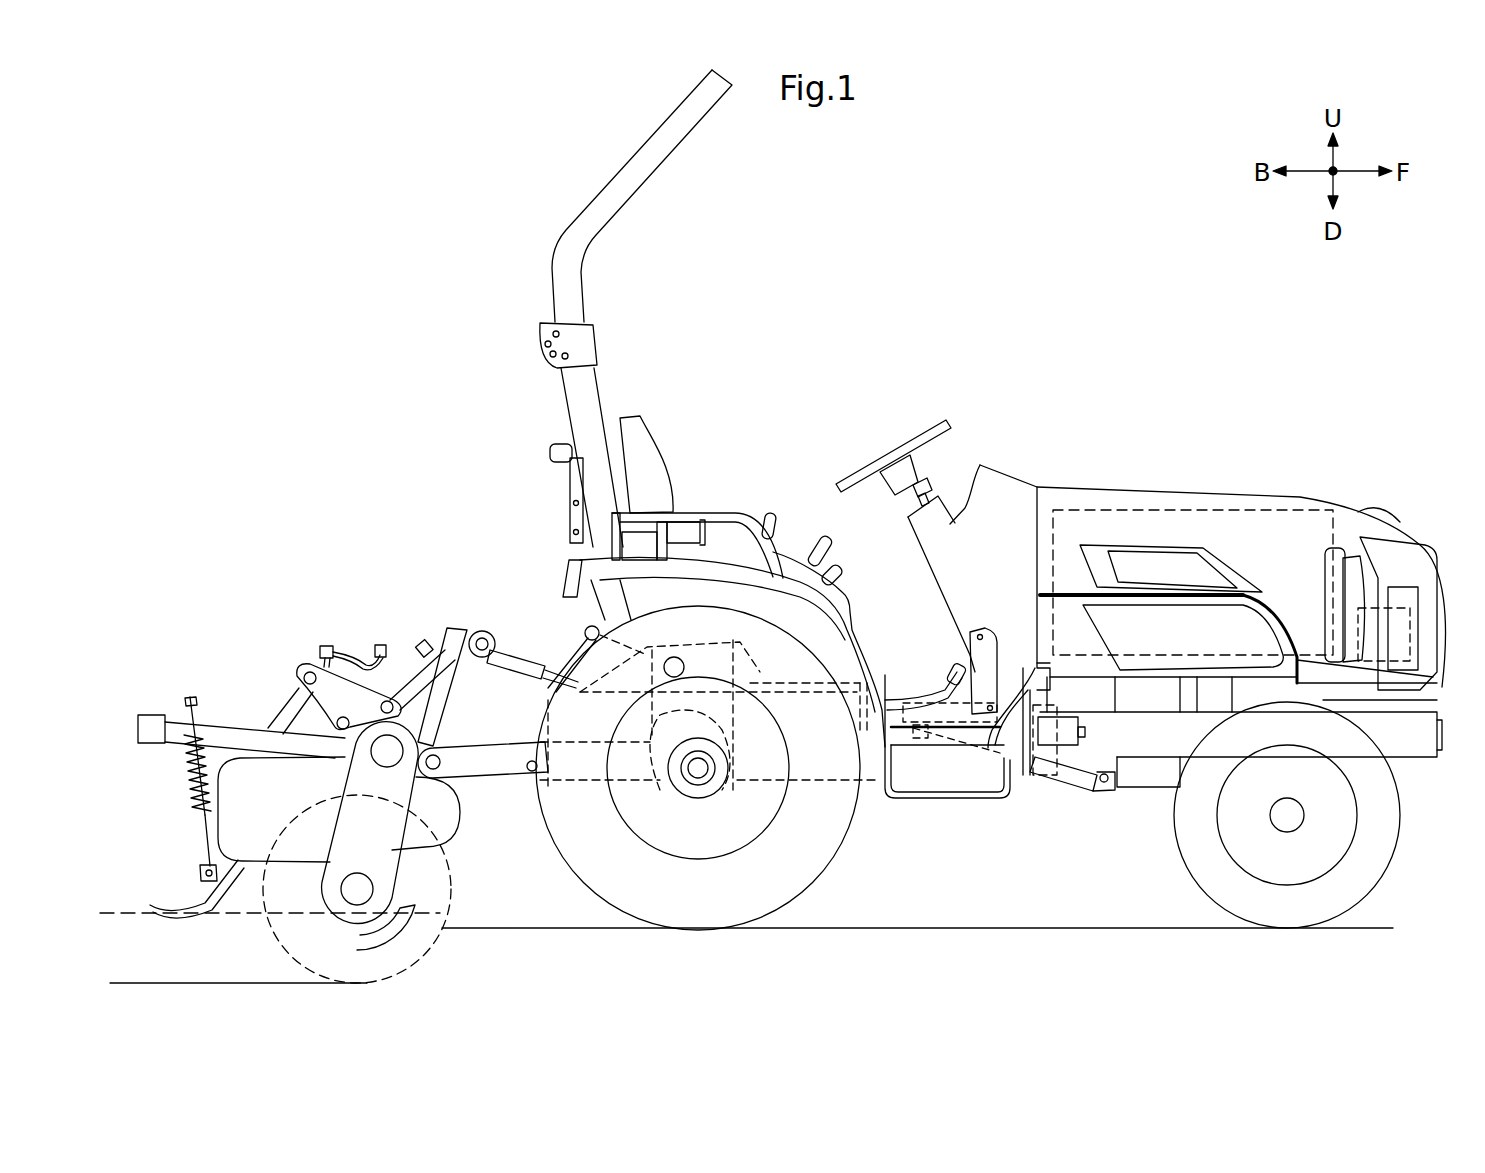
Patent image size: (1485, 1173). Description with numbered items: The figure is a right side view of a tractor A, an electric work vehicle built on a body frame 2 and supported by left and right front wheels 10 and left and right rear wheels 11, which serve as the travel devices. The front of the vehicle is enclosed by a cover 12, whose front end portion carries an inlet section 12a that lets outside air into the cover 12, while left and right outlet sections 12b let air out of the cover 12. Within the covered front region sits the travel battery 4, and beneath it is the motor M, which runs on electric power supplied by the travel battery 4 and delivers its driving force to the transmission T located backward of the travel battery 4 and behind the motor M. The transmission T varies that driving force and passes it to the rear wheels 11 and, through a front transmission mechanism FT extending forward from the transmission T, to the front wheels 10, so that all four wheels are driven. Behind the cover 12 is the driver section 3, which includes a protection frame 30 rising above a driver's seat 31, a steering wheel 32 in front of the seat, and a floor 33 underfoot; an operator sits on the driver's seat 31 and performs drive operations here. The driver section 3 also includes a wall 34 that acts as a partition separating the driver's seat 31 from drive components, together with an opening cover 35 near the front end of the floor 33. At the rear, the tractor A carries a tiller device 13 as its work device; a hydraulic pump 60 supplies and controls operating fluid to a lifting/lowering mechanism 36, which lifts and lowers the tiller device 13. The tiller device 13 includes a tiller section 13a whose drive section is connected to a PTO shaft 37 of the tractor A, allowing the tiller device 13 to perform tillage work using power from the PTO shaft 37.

The tractor A is at (314, 212).
The body frame 2 is at (1412, 747).
The driver section 3 is at (803, 345).
The travel battery 4 is at (1237, 502).
The front wheels 10 is at (1200, 872).
The rear wheels 11 is at (818, 868).
The cover 12 is at (1135, 490).
The inlet section 12a is at (1433, 613).
The outlet sections 12b is at (1252, 632).
The tiller device 13 is at (323, 635).
The tiller section 13a is at (398, 893).
The protection frame 30 is at (650, 142).
The driver's seat 31 is at (641, 443).
The steering wheel 32 is at (925, 433).
The floor 33 is at (941, 740).
The wall 34 is at (948, 602).
The opening cover 35 is at (970, 652).
The lifting/lowering mechanism 36 is at (505, 643).
The PTO shaft 37 is at (511, 752).
The hydraulic pump 60 is at (1048, 742).
The front transmission mechanism FT is at (1085, 792).
The motor M is at (1112, 696).
The transmission T is at (822, 782).